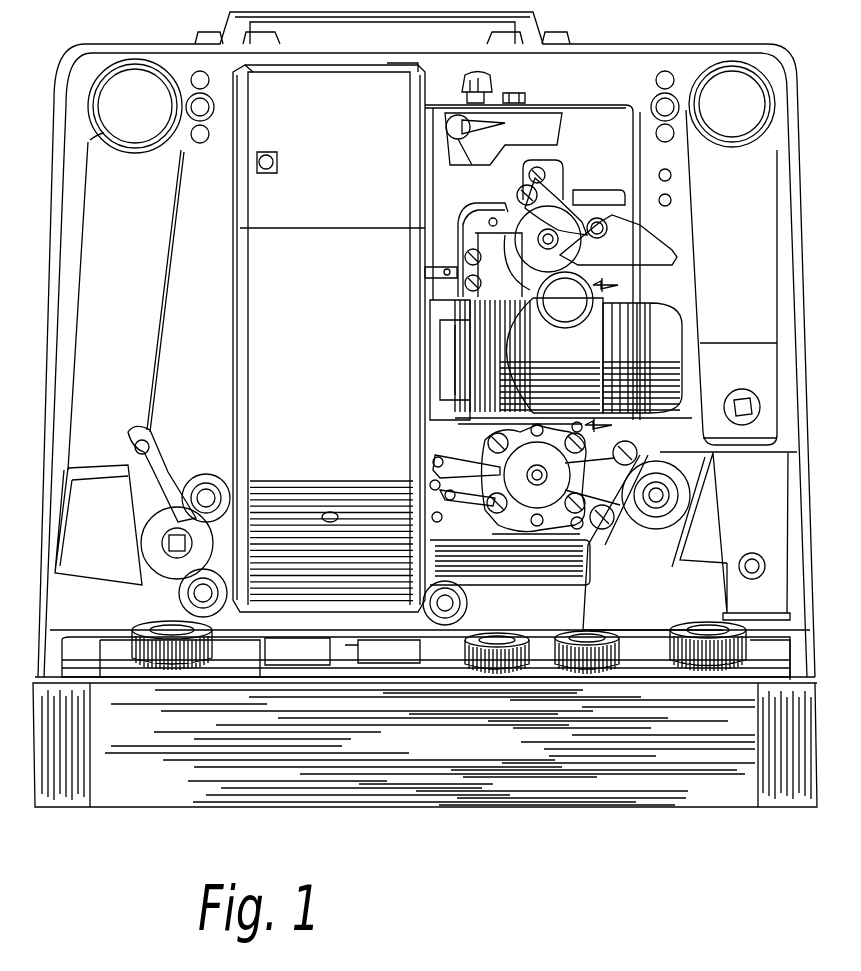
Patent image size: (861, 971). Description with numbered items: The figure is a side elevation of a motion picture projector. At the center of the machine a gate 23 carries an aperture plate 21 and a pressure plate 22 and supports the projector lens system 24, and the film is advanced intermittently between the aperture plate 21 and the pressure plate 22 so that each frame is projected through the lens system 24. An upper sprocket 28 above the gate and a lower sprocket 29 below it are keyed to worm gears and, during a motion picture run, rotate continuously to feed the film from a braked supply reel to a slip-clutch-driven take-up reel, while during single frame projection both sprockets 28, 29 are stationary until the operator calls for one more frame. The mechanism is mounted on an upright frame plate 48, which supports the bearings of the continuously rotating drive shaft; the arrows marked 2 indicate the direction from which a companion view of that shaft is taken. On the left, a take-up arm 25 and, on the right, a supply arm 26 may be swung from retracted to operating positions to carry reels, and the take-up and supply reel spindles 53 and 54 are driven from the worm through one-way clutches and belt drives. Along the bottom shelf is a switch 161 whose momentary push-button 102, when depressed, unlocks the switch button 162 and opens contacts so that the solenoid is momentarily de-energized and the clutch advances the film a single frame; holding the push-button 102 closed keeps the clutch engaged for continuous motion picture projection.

The section line 2- 2 is at (609, 361).
The aperture plate 21 is at (460, 250).
The pressure plate 22 is at (465, 278).
The gate 23 is at (450, 358).
The projector lens system 24 is at (663, 323).
The take-up arm 25 is at (128, 300).
The supply arm 26 is at (748, 244).
The upper sprocket 28 is at (560, 255).
The lower sprocket 29 is at (550, 466).
The upright frame plate 48 is at (608, 89).
The take-up reel spindle 53 is at (163, 538).
The supply reel spindle 54 is at (760, 380).
The momentary push-button 102 is at (398, 655).
The switch 161 is at (430, 645).
The switch button 162 is at (295, 655).